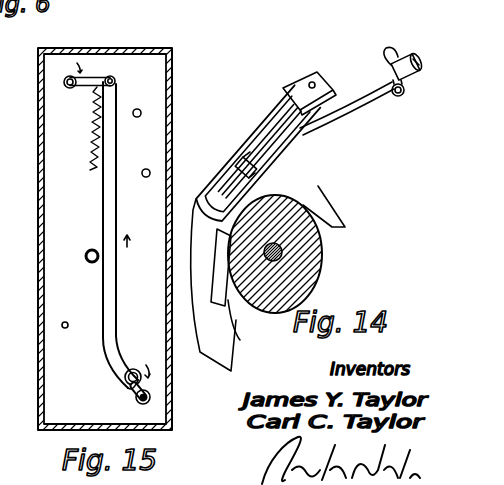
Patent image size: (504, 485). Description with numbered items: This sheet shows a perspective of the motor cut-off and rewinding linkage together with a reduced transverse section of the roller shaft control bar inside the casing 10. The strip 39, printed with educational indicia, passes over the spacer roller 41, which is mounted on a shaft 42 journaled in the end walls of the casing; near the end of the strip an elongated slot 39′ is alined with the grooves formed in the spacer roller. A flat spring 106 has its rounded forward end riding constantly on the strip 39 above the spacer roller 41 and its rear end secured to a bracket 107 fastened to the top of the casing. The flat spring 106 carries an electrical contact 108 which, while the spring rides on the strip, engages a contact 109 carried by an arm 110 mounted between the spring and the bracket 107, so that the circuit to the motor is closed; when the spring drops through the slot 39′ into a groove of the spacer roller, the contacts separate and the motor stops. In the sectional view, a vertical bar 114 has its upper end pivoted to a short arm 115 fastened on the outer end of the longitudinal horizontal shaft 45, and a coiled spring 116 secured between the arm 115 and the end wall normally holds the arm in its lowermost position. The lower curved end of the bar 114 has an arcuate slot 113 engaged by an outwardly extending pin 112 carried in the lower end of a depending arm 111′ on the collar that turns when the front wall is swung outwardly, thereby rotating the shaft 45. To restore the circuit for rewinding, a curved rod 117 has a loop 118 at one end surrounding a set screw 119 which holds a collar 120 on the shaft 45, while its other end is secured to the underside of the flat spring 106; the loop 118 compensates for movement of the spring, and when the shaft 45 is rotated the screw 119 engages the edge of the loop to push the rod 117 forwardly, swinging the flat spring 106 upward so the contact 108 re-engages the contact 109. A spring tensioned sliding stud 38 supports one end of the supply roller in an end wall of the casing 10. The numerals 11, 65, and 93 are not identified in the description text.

In FIG. 15, the casing 10 is at (48, 285).
In FIG. 15, the housing 11 is at (56, 433).
In FIG. 15, the spring tensioned sliding stud 38 is at (90, 250).
In FIG. 14, the strip 39 is at (335, 214).
In FIG. 14, the elongated slot 39′ is at (233, 313).
In FIG. 14, the spacer roller 41 is at (299, 295).
In FIG. 14, the shaft 42 is at (284, 254).
In FIG. 15, the longitudinal horizontal shaft 45 is at (63, 85).
In FIG. 14, the member 65 is at (263, 5).
In FIG. 15, the opening 93 is at (66, 328).
In FIG. 14, the flat spring 106 is at (265, 190).
In FIG. 14, the bracket 107 is at (258, 130).
In FIG. 14, the electrical contact 108 is at (273, 168).
In FIG. 14, the contact 109 is at (247, 167).
In FIG. 14, the arm 110 is at (278, 130).
In FIG. 15, the depending arm 111′ is at (141, 386).
In FIG. 15, the pin 112 is at (147, 397).
In FIG. 15, the arcuate slot 113 is at (130, 391).
In FIG. 15, the vertical bar 114 is at (103, 293).
In FIG. 15, the short arm 115 is at (98, 78).
In FIG. 15, the coiled spring 116 is at (94, 130).
In FIG. 14, the curved rod 117 is at (375, 94).
In FIG. 14, the loop 118 is at (392, 78).
In FIG. 14, the set screw 119 is at (396, 100).
In FIG. 14, the collar 120 is at (410, 53).